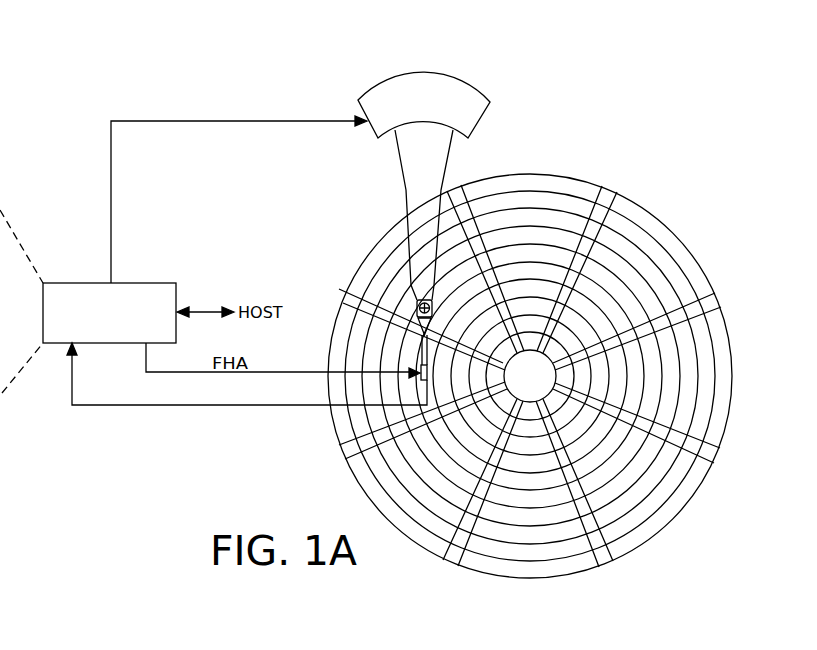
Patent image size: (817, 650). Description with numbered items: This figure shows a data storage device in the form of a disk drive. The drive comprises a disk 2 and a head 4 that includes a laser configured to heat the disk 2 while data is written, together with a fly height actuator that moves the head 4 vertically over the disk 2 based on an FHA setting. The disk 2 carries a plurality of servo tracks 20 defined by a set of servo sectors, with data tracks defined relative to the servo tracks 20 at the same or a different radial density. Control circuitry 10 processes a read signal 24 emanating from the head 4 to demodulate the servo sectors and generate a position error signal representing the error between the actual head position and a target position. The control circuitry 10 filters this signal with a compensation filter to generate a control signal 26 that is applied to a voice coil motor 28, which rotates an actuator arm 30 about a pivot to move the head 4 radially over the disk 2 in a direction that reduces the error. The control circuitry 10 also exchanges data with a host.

The disk 2 is at (672, 216).
The head 4 is at (437, 380).
The control circuitry 10 is at (147, 283).
The servo tracks 20 is at (528, 203).
The read signal 24 is at (232, 407).
The control signal 26 is at (111, 188).
The voice coil motor 28 is at (375, 129).
The actuator arm 30 is at (407, 185).